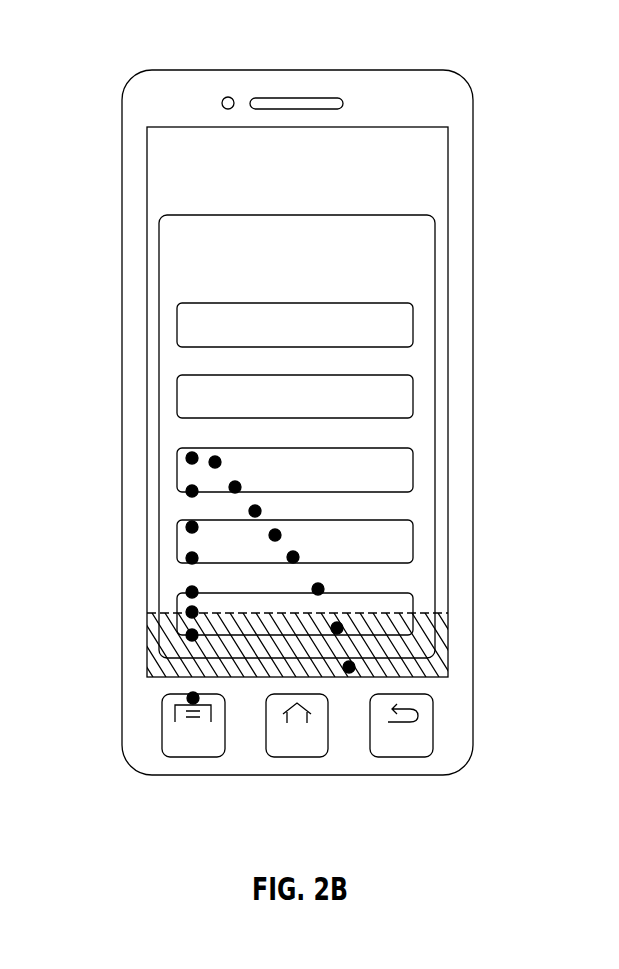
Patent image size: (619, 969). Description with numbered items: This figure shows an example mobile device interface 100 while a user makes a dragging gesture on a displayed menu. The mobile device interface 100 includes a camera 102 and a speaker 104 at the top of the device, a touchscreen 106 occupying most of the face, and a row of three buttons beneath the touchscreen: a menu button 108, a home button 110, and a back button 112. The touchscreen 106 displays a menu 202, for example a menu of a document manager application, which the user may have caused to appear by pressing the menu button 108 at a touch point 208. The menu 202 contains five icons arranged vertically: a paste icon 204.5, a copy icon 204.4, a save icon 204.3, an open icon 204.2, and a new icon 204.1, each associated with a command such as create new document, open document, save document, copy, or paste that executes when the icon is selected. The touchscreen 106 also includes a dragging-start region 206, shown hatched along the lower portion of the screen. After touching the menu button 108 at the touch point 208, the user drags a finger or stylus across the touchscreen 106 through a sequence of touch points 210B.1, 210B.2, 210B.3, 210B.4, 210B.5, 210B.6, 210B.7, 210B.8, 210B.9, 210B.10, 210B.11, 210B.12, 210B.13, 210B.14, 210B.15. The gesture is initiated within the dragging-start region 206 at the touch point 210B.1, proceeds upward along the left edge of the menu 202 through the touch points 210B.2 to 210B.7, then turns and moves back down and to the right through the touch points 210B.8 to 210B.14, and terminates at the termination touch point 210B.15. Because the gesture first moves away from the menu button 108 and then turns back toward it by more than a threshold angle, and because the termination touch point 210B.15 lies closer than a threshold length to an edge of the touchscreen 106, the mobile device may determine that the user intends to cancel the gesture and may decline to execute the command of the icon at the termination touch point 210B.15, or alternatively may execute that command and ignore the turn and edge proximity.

The mobile device interface 100 is at (190, 70).
The camera 102 is at (232, 97).
The speaker 104 is at (300, 98).
The touchscreen 106 is at (448, 170).
The menu button 108 is at (195, 757).
The home button 110 is at (297, 757).
The back button 112 is at (403, 757).
The menu 202 is at (435, 240).
The new icon 204.1 is at (413, 605).
The open icon 204.2 is at (413, 543).
The save icon 204.3 is at (413, 470).
The copy icon 204.4 is at (413, 398).
The paste icon 204.5 is at (413, 325).
The dragging-start region 206 is at (484, 615).
The touch point 208 is at (188, 699).
The touch point 210B.1 is at (187, 637).
The touch point 210B.2 is at (186, 612).
The touch point 210B.3 is at (186, 592).
The touch point 210B.4 is at (186, 558).
The touch point 210B.5 is at (186, 527).
The touch point 210B.6 is at (186, 491).
The touch point 210B.7 is at (186, 458).
The touch point 210B.8 is at (220, 460).
The touch point 210B.9 is at (240, 487).
The touch point 210B.10 is at (260, 511).
The touch point 210B.11 is at (281, 535).
The touch point 210B.12 is at (296, 562).
The touch point 210B.13 is at (321, 594).
The touch point 210B.14 is at (340, 633).
The termination touch point 210B.15 is at (350, 673).